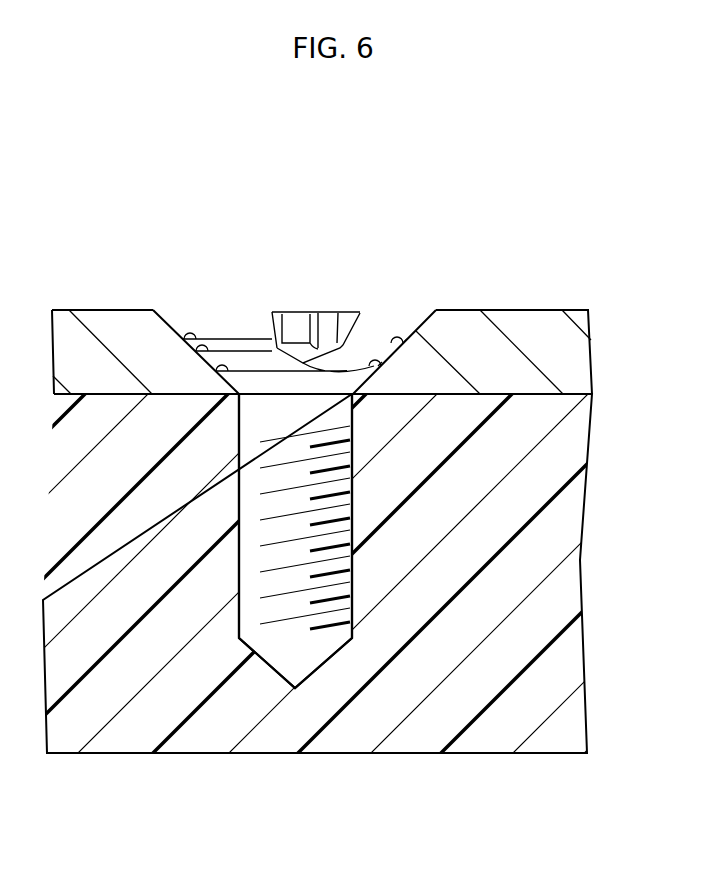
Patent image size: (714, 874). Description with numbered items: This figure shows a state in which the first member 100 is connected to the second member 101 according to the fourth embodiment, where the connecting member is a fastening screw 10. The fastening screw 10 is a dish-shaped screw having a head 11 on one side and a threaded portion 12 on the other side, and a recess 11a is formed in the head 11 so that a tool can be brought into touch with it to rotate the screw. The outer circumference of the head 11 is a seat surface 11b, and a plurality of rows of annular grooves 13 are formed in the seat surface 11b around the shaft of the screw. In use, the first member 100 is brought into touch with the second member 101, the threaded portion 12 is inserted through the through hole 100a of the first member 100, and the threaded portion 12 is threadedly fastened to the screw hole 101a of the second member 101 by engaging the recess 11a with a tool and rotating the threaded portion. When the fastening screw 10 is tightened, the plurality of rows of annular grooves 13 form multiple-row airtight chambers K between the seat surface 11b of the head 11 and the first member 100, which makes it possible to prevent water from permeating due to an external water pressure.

The fastening screw 10 is at (263, 257).
The head 11 is at (212, 322).
The recess 11a is at (296, 330).
The seat surface 11b is at (218, 382).
The threaded portion 12 is at (253, 565).
The annular grooves 13 is at (257, 361).
The first member 100 is at (93, 318).
The through hole 100a is at (167, 318).
The second member 101 is at (273, 742).
The screw hole 101a is at (346, 501).
The airtight chambers K is at (380, 367).